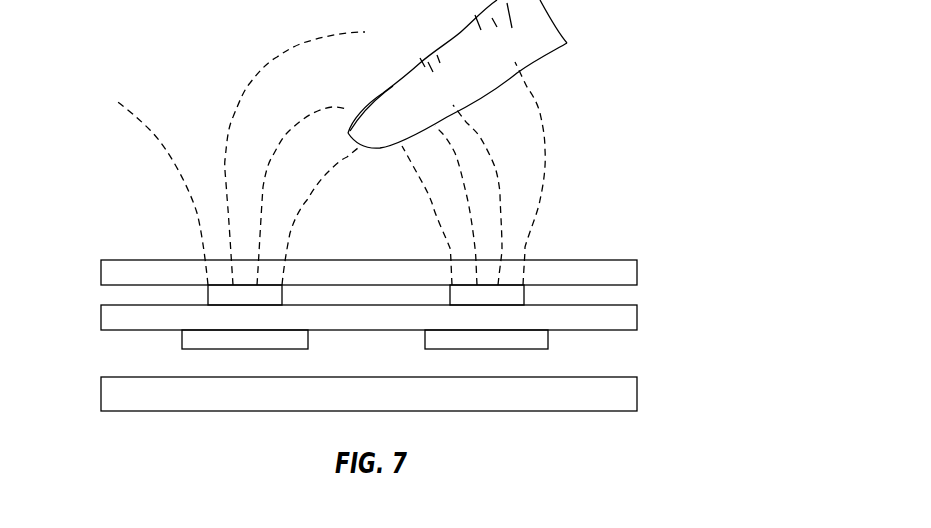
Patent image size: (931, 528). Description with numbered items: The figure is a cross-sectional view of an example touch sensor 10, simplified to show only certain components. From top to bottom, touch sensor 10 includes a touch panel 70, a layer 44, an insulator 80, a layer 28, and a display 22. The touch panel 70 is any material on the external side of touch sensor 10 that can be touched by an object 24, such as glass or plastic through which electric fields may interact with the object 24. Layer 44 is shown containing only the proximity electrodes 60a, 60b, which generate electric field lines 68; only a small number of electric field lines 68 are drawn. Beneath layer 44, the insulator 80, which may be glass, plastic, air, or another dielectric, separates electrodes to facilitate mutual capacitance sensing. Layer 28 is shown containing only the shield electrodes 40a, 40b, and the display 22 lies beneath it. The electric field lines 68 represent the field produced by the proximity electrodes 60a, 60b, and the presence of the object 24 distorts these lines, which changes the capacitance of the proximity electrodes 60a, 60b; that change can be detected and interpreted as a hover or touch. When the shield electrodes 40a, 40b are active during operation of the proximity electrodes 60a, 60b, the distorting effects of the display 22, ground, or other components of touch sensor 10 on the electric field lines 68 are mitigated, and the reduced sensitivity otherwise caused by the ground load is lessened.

The touch sensor 10 is at (660, 92).
The display 22 is at (100, 395).
The object 24 is at (402, 98).
The layer 28 is at (648, 358).
The shield electrode 40a is at (183, 335).
The shield electrode 40b is at (548, 335).
The layer 44 is at (648, 297).
The proximity electrode 60a is at (207, 295).
The proximity electrode 60b is at (525, 298).
The electric field lines 68 is at (535, 212).
The touch panel 70 is at (100, 275).
The insulator 80 is at (100, 320).